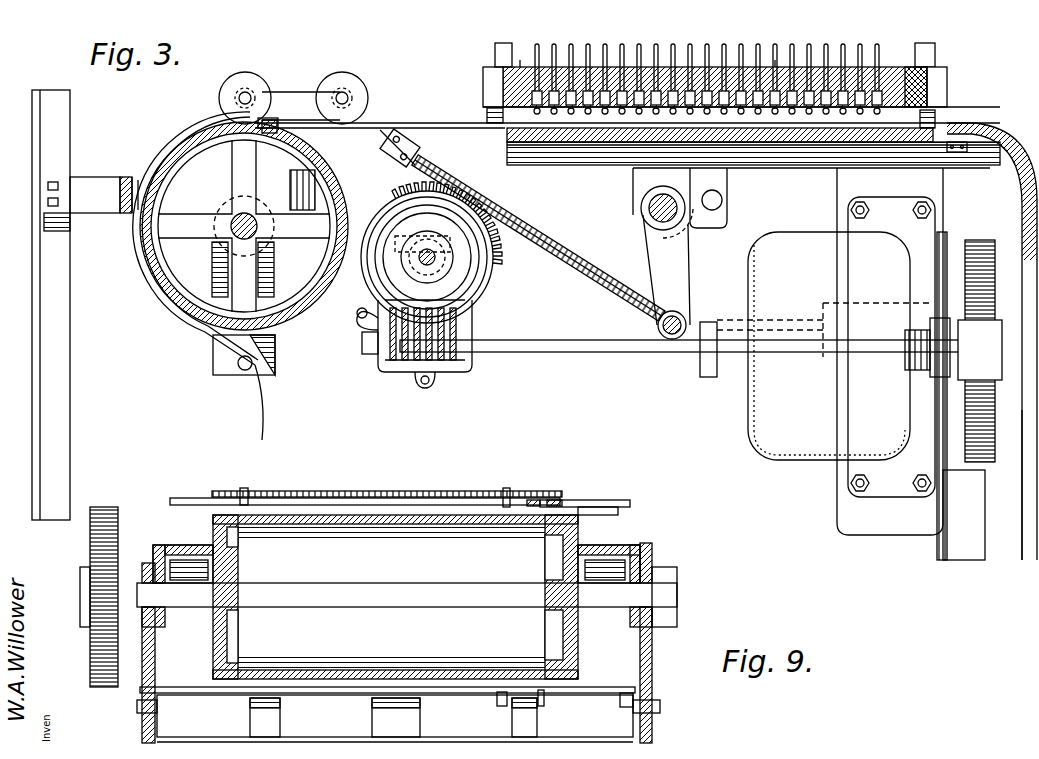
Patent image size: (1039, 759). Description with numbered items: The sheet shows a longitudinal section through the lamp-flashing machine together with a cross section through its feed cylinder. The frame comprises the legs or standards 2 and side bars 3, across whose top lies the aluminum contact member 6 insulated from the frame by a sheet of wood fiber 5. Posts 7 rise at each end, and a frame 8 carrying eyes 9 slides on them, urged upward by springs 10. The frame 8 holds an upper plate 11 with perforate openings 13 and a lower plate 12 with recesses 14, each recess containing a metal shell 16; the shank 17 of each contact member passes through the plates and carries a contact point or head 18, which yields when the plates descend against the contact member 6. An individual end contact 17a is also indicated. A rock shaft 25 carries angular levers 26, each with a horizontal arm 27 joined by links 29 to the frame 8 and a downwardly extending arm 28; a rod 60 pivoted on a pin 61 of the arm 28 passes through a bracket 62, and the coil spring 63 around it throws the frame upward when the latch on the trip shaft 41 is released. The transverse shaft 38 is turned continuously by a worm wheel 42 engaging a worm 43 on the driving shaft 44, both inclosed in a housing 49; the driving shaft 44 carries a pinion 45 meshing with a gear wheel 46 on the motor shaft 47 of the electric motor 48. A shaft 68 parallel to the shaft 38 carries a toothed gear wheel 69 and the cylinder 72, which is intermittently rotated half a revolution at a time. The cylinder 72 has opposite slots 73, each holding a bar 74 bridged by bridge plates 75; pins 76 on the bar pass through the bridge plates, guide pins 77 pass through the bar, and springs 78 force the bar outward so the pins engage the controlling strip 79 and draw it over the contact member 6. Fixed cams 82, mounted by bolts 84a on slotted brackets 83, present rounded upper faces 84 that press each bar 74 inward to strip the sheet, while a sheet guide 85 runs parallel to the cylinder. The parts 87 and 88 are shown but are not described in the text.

In FIG. 3, the legs or standards 2 is at (57, 418).
In FIG. 3, the side bars 3 is at (360, 128).
In FIG. 3, the sheet of wood fiber 5 is at (822, 140).
In FIG. 3, the contact member 6 is at (790, 143).
In FIG. 3, the posts 7 is at (943, 48).
In FIG. 3, the frame 8 is at (908, 76).
In FIG. 3, the eyes 9 is at (948, 82).
In FIG. 3, the springs 10 is at (485, 109).
In FIG. 3, the upper plate 11 is at (541, 67).
In FIG. 3, the lower plate 12 is at (485, 92).
In FIG. 3, the perforate openings 13 is at (563, 67).
In FIG. 3, the recesses 14 is at (506, 134).
In FIG. 3, the metal shell 16 is at (920, 120).
In FIG. 3, the shank 17 is at (657, 67).
In FIG. 3, the end needle 17a is at (522, 67).
In FIG. 3, the contact point or head 18 is at (690, 120).
In FIG. 3, the shaft 25 is at (676, 222).
In FIG. 3, the angular levers 26 is at (690, 300).
In FIG. 3, the arm 27 is at (718, 208).
In FIG. 3, the downwardly extending arm 28 is at (650, 265).
In FIG. 3, the links 29 is at (728, 183).
In FIG. 3, the transverse shaft 38 is at (437, 265).
In FIG. 3, the trip shaft 41 is at (360, 320).
In FIG. 3, the worm wheel 42 is at (433, 292).
In FIG. 3, the worm 43 is at (445, 352).
In FIG. 9, the worm 43 is at (633, 693).
In FIG. 3, the driving shaft 44 is at (630, 346).
In FIG. 3, the pinion 45 is at (982, 365).
In FIG. 3, the gear wheel 46 is at (973, 270).
In FIG. 3, the motor shaft 47 is at (928, 376).
In FIG. 3, the electric motor 48 is at (825, 346).
In FIG. 3, the housing 49 is at (468, 316).
In FIG. 3, the rod 60 is at (528, 200).
In FIG. 3, the pin 61 is at (671, 340).
In FIG. 3, the bracket 62 is at (385, 150).
In FIG. 3, the coil spring 63 is at (497, 202).
In FIG. 9, the shaft 68 is at (436, 592).
In FIG. 9, the gear wheel 69 is at (120, 533).
In FIG. 3, the cylinder 72 is at (206, 138).
In FIG. 9, the cylinder 72 is at (480, 527).
In FIG. 3, the slots 73 is at (315, 98).
In FIG. 9, the slots 73 is at (575, 510).
In FIG. 3, the rod or bar 74 is at (272, 118).
In FIG. 9, the rod or bar 74 is at (580, 514).
In FIG. 9, the bridge plate 75 is at (534, 500).
In FIG. 3, the pins 76 is at (778, 67).
In FIG. 9, the pins 76 is at (504, 490).
In FIG. 9, the guide pins 77 is at (256, 488).
In FIG. 9, the springs 78 is at (566, 500).
In FIG. 3, the controlling strip 79 is at (266, 425).
In FIG. 9, the controlling strip 79 is at (390, 498).
In FIG. 3, the fixed cams 82 is at (280, 335).
In FIG. 9, the fixed cams 82 is at (160, 688).
In FIG. 9, the brackets 83 is at (156, 637).
In FIG. 3, the rounded upper faces 84 is at (270, 362).
In FIG. 9, the bolts 84a is at (443, 712).
In FIG. 3, the sheet guide 85 is at (152, 295).
In FIG. 9, the nut 87 is at (631, 690).
In FIG. 3, the frame 88 is at (1030, 415).